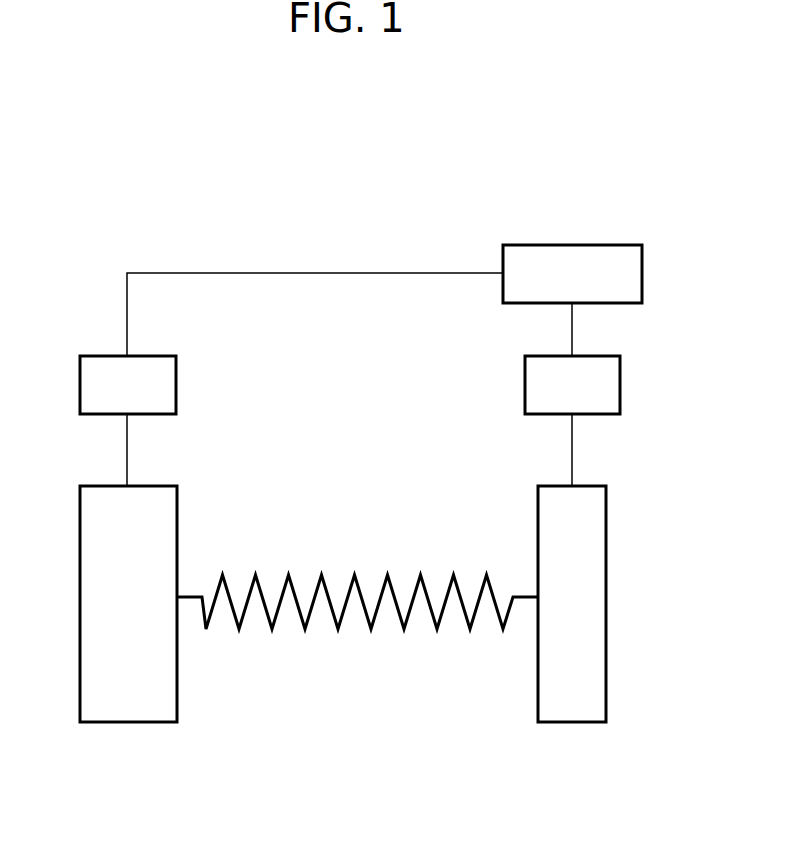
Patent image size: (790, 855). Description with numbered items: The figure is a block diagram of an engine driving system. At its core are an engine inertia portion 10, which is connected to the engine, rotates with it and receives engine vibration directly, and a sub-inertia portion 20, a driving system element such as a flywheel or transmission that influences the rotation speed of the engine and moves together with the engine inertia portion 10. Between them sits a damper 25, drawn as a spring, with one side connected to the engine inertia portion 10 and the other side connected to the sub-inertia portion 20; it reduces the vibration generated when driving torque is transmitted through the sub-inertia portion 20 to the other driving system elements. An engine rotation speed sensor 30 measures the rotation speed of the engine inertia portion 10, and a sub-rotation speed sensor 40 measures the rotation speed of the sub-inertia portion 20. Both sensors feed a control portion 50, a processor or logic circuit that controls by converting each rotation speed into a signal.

The engine inertia portion 10 is at (80, 603).
The sub-inertia portion 20 is at (606, 603).
The damper 25 is at (373, 631).
The engine rotation speed sensor 30 is at (80, 384).
The sub-rotation speed sensor 40 is at (620, 384).
The control portion 50 is at (642, 273).